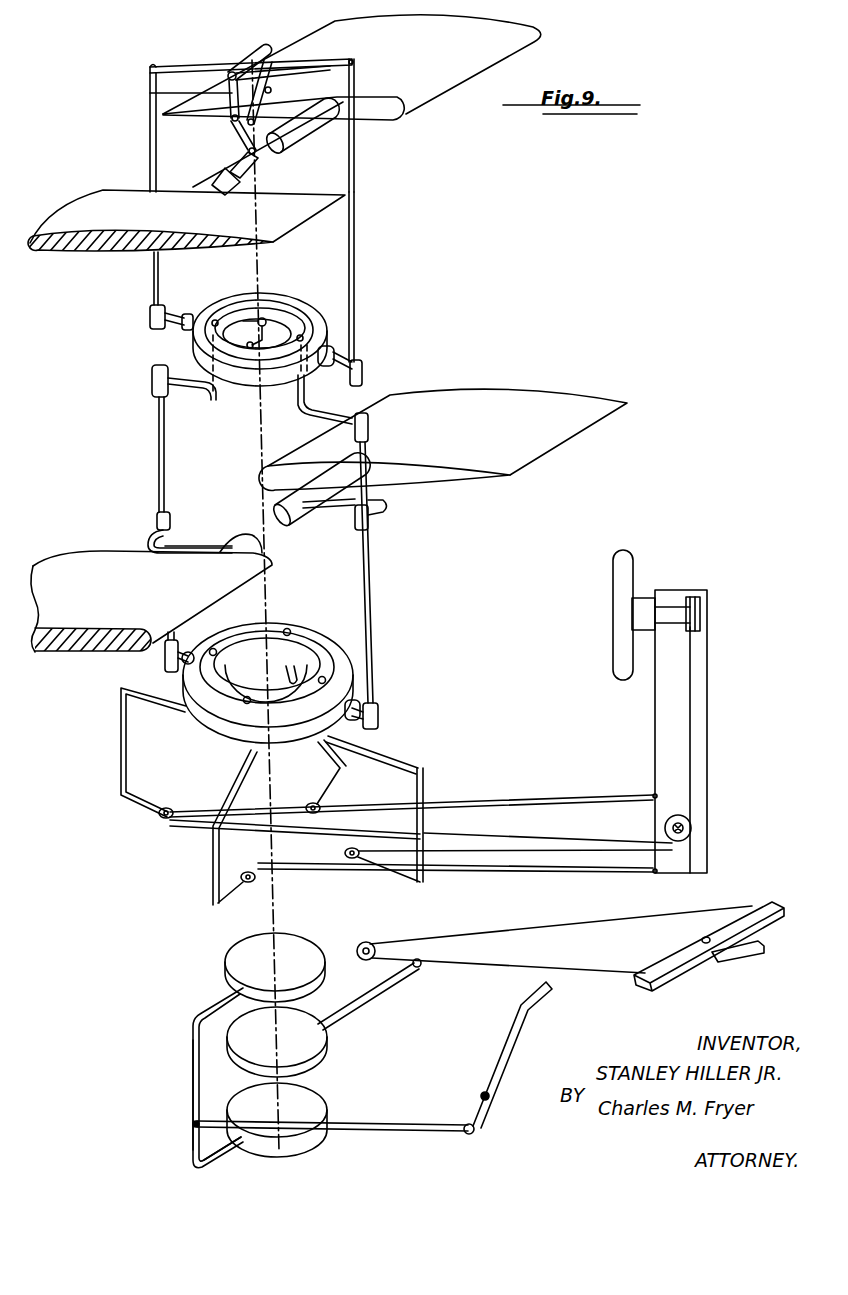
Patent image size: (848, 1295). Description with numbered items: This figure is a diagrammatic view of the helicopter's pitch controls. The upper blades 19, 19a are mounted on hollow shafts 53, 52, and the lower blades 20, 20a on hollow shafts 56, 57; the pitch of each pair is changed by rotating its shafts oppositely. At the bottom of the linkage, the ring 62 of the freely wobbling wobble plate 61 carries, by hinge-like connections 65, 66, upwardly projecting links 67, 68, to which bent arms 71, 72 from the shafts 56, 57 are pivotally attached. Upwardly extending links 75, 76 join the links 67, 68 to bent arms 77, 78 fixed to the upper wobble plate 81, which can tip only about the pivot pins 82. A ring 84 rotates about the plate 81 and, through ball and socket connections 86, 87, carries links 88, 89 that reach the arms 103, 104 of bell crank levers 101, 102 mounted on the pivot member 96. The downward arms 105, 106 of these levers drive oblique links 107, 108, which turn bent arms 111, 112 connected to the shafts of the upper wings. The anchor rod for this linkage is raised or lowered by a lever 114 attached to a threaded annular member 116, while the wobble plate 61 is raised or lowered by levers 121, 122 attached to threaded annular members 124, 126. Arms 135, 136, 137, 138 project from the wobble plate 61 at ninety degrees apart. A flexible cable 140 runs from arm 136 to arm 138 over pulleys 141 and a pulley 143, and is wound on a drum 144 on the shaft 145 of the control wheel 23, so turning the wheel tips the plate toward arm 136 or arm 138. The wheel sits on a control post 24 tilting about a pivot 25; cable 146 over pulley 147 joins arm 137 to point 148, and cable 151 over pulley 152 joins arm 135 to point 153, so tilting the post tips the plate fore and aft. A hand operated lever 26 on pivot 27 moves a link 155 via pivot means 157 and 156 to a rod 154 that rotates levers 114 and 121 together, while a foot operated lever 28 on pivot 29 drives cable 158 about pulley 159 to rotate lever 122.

The rotating blade 19 is at (528, 32).
The rotating blade 19a is at (138, 219).
The rotating blade 20 is at (128, 600).
The rotating blade 20a is at (500, 426).
The control wheel 23 is at (625, 614).
The control post 24 is at (657, 715).
The pivot 25 is at (692, 830).
The hand operated lever 26 is at (553, 988).
The pivot 27 is at (490, 1094).
The foot operated lever 28 is at (768, 905).
The pivot 29 is at (702, 940).
The hollow shaft 52 is at (212, 178).
The hollow shaft 53 is at (302, 127).
The hollow shaft 56 is at (242, 540).
The hollow shaft 57 is at (298, 520).
The wobble plate 61 is at (310, 640).
The ring 62 is at (215, 735).
The hinge-like connection 65 is at (165, 657).
The hinge-like connection 66 is at (380, 718).
The link 67 is at (150, 555).
The link 68 is at (375, 585).
The bent arm 71 is at (197, 540).
The bent arm 72 is at (334, 508).
The link 75 is at (158, 478).
The link 76 is at (368, 492).
The bent arm 77 is at (198, 402).
The bent arm 78 is at (300, 416).
The wobble plate 81 is at (298, 320).
The pivot pin 82 is at (243, 321).
The ring 84 is at (200, 350).
The ball and socket connection 86 is at (150, 316).
The ball and socket connection 87 is at (362, 370).
The link 88 is at (152, 285).
The link 89 is at (358, 290).
The pivot member 96 is at (250, 60).
The bell crank lever 101 is at (230, 73).
The bell crank lever 102 is at (258, 58).
The arm 103 is at (155, 66).
The arm 104 is at (313, 67).
The arm 105 is at (282, 87).
The arm 106 is at (150, 93).
The oblique link 107 is at (356, 90).
The oblique link 108 is at (238, 128).
The bent arm 111 is at (290, 150).
The bent arm 112 is at (248, 156).
The lever 114 is at (203, 1156).
The annular member 116 is at (322, 1110).
The lever 121 is at (215, 996).
The lever 122 is at (384, 988).
The annular member 124 is at (240, 968).
The annular member 126 is at (320, 1048).
The arm 135 is at (210, 862).
The arm 136 is at (127, 770).
The arm 137 is at (345, 752).
The arm 138 is at (426, 796).
The flexible cable 140 is at (497, 848).
The pulley 141 is at (181, 790).
The pulley 143 is at (665, 829).
The drum 144 is at (700, 593).
The shaft 145 is at (665, 615).
The flexible cable 146 is at (525, 807).
The pulley 147 is at (320, 808).
The point 148 is at (654, 797).
The flexible cable 151 is at (508, 870).
The pulley 152 is at (246, 883).
The point 153 is at (654, 875).
The rod 154 is at (195, 1075).
The link 155 is at (372, 1130).
The pivot means 156 is at (194, 1124).
The pivot means 157 is at (474, 1128).
The cable 158 is at (500, 935).
The pulley 159 is at (367, 943).